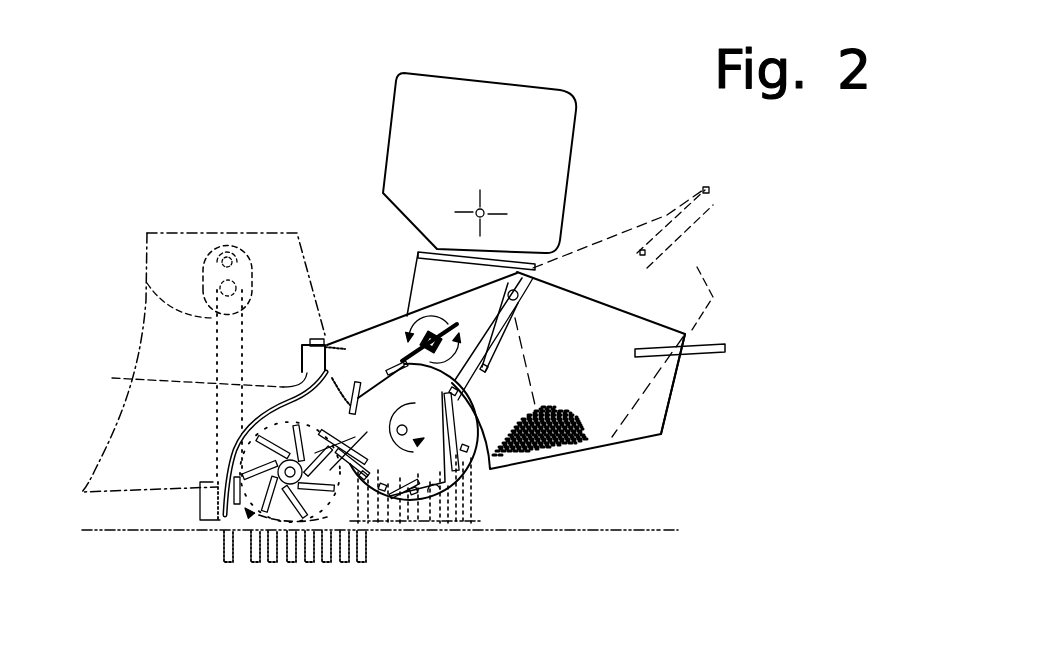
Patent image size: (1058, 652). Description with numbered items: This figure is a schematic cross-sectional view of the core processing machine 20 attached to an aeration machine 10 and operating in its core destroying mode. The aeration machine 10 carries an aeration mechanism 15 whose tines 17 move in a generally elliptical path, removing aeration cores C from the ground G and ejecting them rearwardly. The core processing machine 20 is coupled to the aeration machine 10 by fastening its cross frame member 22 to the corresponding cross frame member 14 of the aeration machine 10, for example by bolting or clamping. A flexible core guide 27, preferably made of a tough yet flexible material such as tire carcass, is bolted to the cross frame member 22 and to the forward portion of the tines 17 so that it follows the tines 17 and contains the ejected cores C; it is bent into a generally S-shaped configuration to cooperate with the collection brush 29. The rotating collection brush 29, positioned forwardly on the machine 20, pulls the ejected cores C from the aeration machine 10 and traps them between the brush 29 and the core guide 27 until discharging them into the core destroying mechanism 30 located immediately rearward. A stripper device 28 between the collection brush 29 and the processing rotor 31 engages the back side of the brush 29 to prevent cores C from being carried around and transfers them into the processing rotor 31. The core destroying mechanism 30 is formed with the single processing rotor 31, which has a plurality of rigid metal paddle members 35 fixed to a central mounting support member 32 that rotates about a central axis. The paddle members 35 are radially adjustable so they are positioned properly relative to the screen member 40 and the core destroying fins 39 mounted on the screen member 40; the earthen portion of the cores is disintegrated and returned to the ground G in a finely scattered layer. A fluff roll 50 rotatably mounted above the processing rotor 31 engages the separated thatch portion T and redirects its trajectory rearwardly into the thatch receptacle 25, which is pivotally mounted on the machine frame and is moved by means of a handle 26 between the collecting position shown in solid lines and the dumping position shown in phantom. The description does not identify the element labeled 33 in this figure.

The aeration machine 10 is at (377, 291).
The cross frame member 14 is at (188, 381).
The aeration mechanism 15 is at (147, 283).
The tines 17 is at (222, 533).
The core processing machine 20 is at (517, 138).
The cross frame member 22 is at (300, 356).
The thatch receptacle 25 is at (702, 267).
The handle 26 is at (733, 353).
The flexible core guide 27 is at (255, 425).
The stripper device 28 is at (318, 440).
The collection brush 29 is at (244, 571).
The core destroying mechanism 30 is at (529, 548).
The processing rotor 31 is at (385, 253).
The central mounting support member 32 is at (370, 385).
The conveyor drum 33 is at (402, 436).
The paddle members 35 is at (483, 417).
The core destroying fins 39 is at (457, 524).
The screen member 40 is at (478, 462).
The fluff roll 50 is at (430, 336).
The aeration cores C is at (227, 506).
The ground G is at (659, 529).
The thatch portion T is at (472, 425).